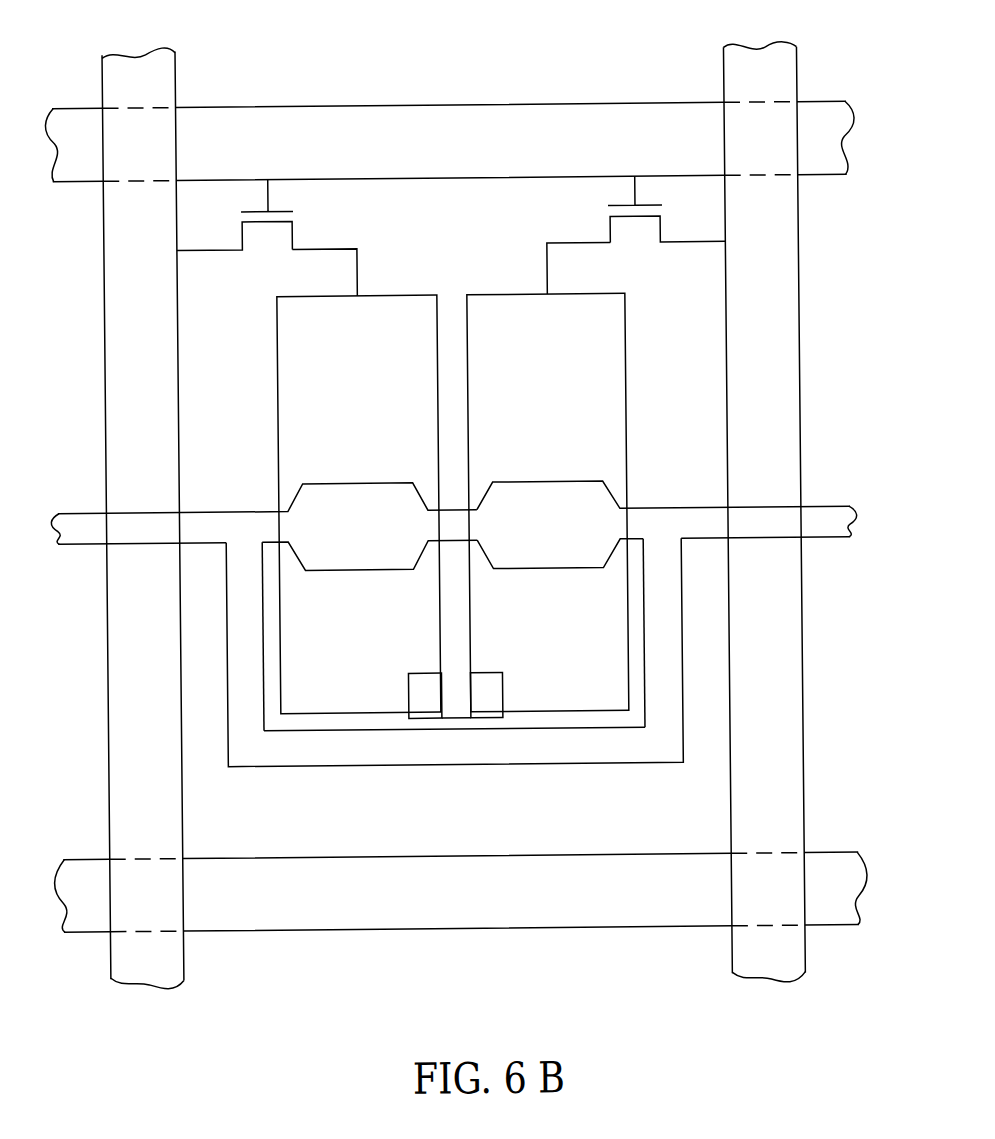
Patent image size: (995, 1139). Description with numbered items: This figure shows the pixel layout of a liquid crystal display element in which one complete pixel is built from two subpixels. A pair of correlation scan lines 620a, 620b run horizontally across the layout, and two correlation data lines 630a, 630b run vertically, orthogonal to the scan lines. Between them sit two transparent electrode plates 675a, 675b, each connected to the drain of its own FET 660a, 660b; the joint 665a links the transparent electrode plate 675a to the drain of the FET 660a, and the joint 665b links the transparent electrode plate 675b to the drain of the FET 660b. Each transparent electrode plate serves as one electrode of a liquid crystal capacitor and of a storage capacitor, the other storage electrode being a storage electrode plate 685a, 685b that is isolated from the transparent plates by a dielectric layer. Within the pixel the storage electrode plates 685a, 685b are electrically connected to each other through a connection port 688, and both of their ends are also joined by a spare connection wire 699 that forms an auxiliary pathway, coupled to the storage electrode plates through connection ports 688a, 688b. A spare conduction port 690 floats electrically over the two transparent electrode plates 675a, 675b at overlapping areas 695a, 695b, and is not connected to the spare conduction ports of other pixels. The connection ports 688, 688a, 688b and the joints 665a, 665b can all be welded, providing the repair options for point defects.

The correlation scan line 620a is at (292, 122).
The correlation scan line 620b is at (209, 913).
The correlation data line 630a is at (107, 297).
The correlation data line 630b is at (791, 373).
The FET 660a is at (265, 236).
The FET 660b is at (643, 237).
The joint 665a is at (355, 271).
The joint 665b is at (545, 276).
The transparent electrode plate 675a is at (395, 292).
The transparent electrode plate 675b is at (487, 294).
The storage electrode plate 685a is at (357, 482).
The storage electrode plate 685b is at (565, 483).
The connection port 688 is at (453, 540).
The connection port 688a is at (272, 541).
The connection port 688b is at (635, 540).
The spare conduction port 690 is at (460, 712).
The overlapping area 695a is at (413, 695).
The overlapping area 695b is at (493, 695).
The spare connection wire 699 is at (393, 748).